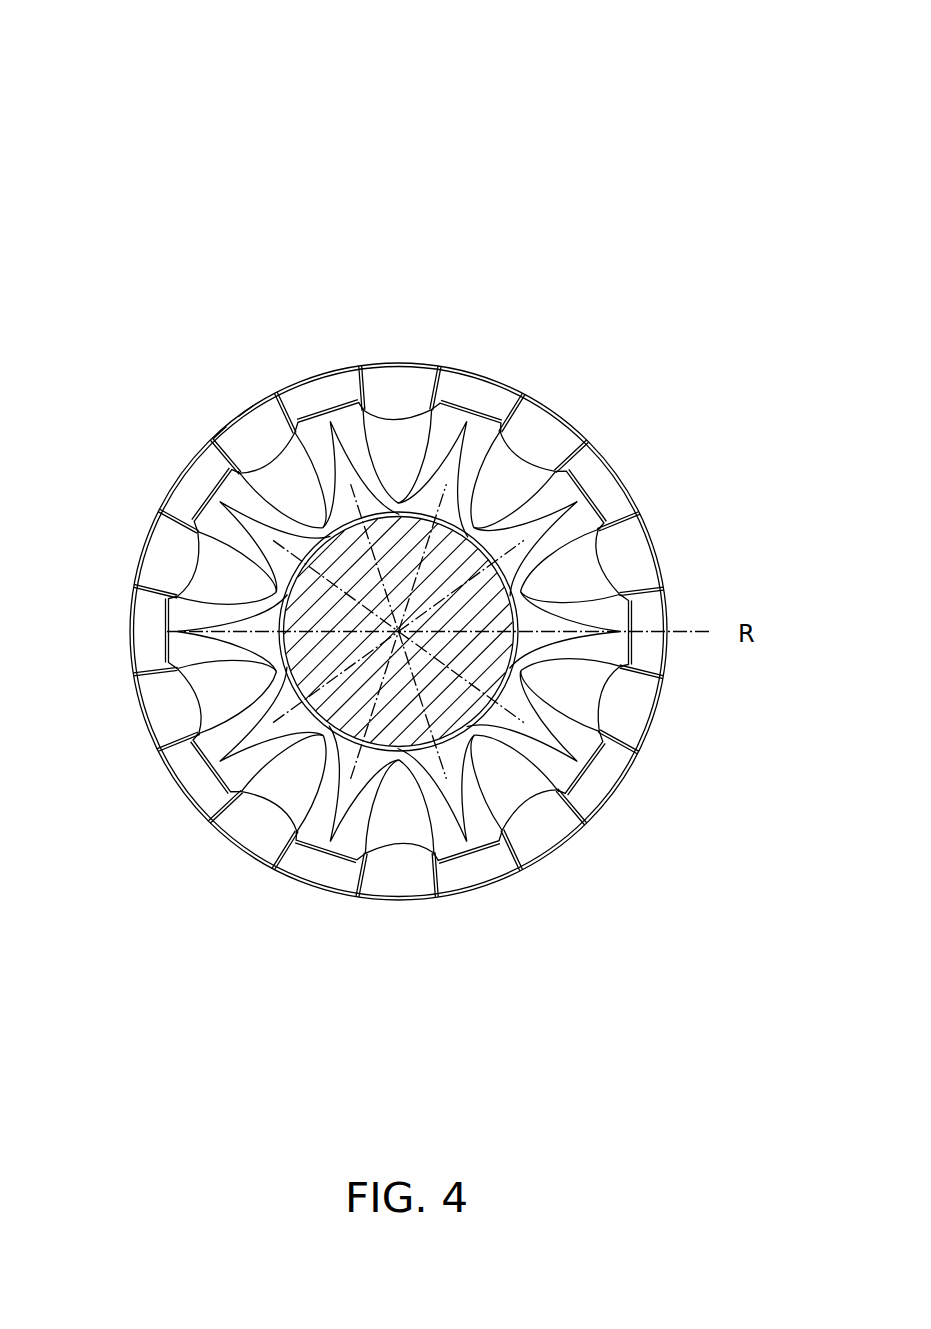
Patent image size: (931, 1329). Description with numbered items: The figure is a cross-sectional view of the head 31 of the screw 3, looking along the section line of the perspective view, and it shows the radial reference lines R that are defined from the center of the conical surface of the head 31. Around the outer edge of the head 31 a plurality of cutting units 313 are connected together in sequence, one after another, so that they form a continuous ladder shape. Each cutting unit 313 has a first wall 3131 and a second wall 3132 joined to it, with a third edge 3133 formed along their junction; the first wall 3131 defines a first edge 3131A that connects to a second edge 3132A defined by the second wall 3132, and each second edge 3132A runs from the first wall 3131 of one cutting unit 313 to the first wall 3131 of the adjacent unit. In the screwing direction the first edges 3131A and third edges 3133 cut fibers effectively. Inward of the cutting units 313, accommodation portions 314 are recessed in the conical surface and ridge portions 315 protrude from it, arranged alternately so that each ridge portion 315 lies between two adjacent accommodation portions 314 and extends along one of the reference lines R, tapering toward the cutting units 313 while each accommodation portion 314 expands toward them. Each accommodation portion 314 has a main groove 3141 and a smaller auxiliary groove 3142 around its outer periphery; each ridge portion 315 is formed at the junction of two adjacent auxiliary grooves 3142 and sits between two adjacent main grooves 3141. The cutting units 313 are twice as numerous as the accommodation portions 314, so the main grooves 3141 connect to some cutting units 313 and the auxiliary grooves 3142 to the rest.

The screw 3 is at (150, 118).
The head 31 is at (680, 518).
The cutting unit 313 is at (155, 491).
The first wall 3131 is at (349, 625).
The first edge 3131A is at (162, 396).
The second wall 3132 is at (398, 581).
The second edge 3132A is at (216, 367).
The third edge 3133 is at (360, 631).
The accommodation portion 314 is at (482, 423).
The main groove 3141 is at (440, 608).
The auxiliary groove 3142 is at (460, 631).
The ridge portion 315 is at (220, 626).